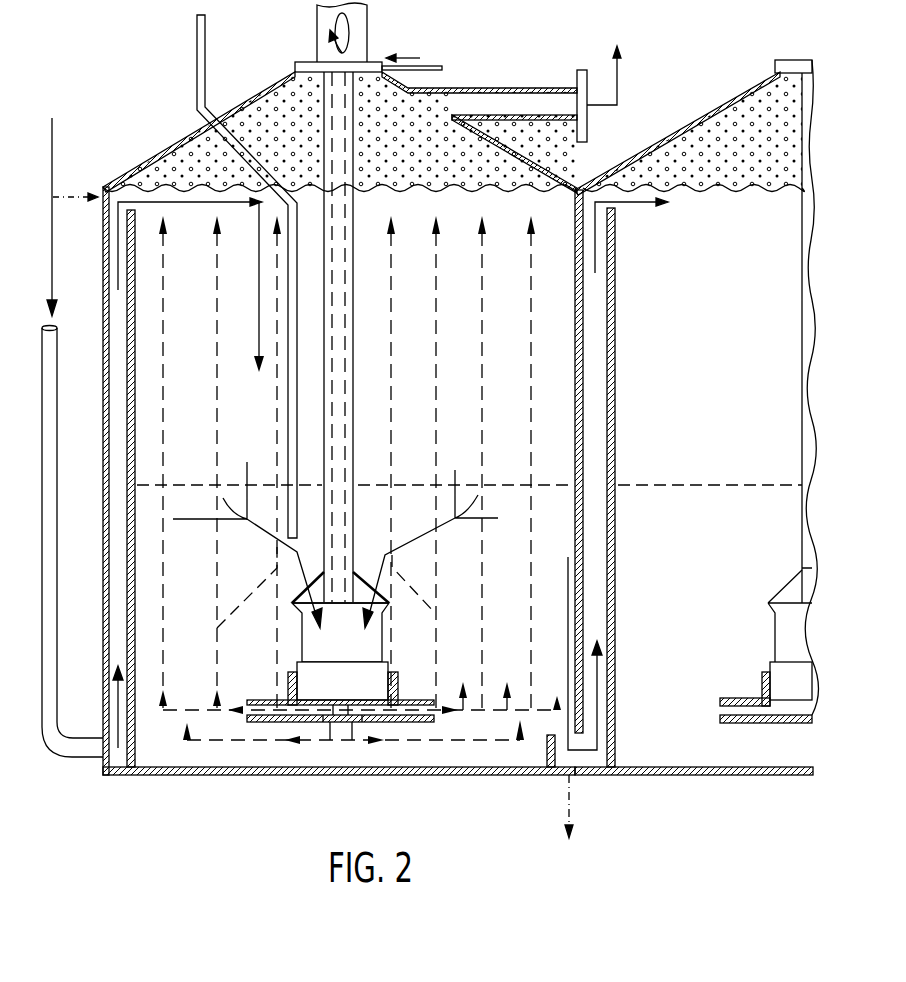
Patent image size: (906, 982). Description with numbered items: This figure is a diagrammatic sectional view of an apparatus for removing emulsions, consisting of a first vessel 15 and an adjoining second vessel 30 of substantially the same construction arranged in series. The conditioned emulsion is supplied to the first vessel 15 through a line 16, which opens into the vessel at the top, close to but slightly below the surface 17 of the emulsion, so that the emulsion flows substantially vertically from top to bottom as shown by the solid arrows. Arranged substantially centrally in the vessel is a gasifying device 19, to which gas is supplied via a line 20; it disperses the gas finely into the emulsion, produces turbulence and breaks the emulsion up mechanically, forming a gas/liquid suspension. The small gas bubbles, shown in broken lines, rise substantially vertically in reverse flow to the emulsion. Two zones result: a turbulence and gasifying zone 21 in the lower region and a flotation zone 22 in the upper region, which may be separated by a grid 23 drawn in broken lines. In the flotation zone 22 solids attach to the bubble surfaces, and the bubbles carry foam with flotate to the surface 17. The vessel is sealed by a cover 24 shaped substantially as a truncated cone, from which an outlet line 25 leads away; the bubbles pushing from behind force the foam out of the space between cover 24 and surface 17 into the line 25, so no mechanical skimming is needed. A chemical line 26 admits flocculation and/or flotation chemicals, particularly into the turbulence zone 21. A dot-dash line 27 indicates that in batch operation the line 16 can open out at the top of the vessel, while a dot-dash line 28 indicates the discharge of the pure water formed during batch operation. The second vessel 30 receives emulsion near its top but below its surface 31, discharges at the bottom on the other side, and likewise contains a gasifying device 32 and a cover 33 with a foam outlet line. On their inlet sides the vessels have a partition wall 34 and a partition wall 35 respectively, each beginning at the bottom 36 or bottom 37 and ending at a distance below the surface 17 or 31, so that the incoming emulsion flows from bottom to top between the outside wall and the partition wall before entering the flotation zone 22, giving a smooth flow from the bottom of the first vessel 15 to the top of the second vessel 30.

The first vessel 15 is at (106, 784).
The line 16 is at (52, 380).
The surface 17 is at (137, 177).
The gasifying device 19 is at (367, 563).
The line 20 is at (430, 63).
The turbulence and gasifying zone 21 is at (206, 601).
The flotation zone 22 is at (204, 409).
The grid 23 is at (177, 483).
The cover 24 is at (255, 98).
The outlet line 25 is at (491, 100).
The chemical line 26 is at (197, 42).
The dot-dash line 27 is at (72, 217).
The dot-dash line 28 is at (569, 815).
The second vessel 30 is at (695, 790).
The surface 31 is at (633, 177).
The gasifying device 32 is at (778, 578).
The cover 33 is at (687, 122).
The partition wall 34 is at (135, 337).
The partition wall 35 is at (615, 378).
The bottom 36 is at (172, 776).
The bottom 37 is at (762, 776).